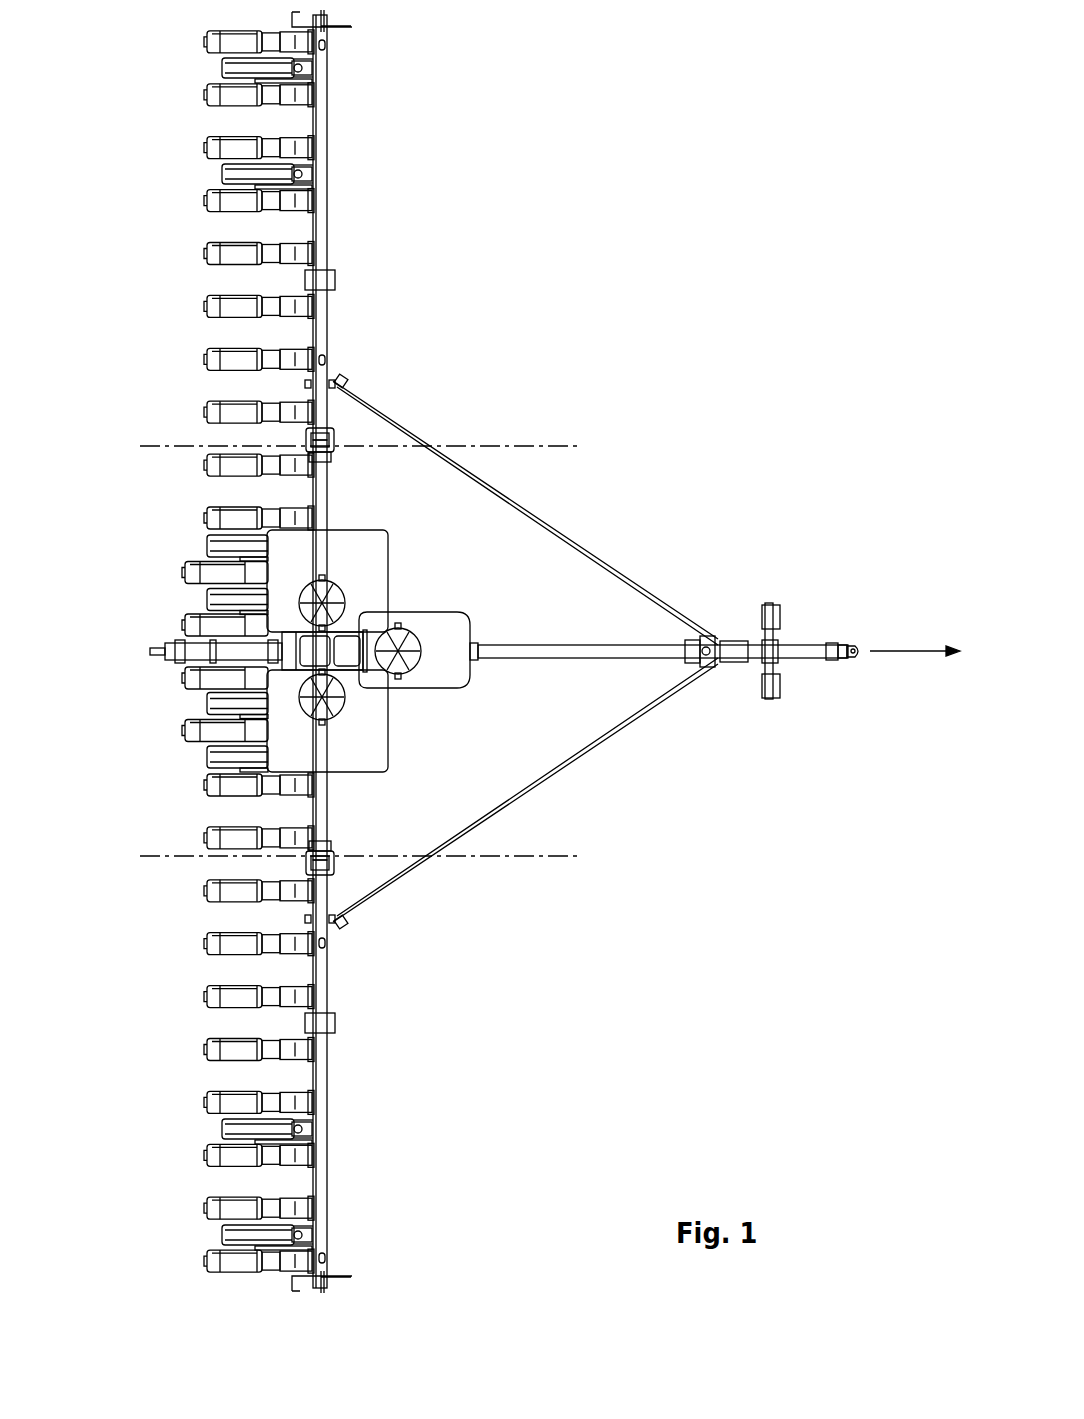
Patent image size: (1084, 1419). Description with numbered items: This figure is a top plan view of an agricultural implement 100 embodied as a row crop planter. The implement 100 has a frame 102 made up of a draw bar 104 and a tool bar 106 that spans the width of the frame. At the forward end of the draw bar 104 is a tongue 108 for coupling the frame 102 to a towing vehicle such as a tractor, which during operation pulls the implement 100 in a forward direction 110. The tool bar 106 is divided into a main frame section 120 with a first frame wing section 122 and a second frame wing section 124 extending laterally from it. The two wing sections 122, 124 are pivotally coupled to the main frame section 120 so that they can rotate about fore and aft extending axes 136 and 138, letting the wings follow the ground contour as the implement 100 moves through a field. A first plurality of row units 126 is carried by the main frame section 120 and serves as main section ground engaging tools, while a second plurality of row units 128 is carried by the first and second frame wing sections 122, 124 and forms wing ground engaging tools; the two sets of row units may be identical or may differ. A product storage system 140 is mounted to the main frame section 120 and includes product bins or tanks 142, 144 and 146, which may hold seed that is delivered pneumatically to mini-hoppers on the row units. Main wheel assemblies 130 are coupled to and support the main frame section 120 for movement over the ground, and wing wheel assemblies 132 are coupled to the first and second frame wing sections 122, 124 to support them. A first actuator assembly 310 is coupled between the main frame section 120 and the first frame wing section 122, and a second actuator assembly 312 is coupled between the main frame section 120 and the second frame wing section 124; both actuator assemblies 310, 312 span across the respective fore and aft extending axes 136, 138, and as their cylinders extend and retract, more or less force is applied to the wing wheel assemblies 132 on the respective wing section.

The implement 100 is at (510, 1065).
The frame 102 is at (634, 518).
The draw bar 104 is at (605, 652).
The tool bar 106 is at (325, 990).
The tongue 108 is at (790, 640).
The forward direction 110 is at (915, 660).
The main frame section 120 is at (325, 785).
The first frame wing section 122 is at (325, 118).
The second frame wing section 124 is at (325, 1168).
The first plurality of row units 126 is at (207, 519).
The second plurality of row units 128 is at (207, 359).
The main wheel assemblies 130 is at (207, 600).
The wing wheel assemblies 132 is at (207, 174).
The fore and aft extending axis 136 is at (547, 440).
The fore and aft extending axis 138 is at (547, 860).
The product storage system 140 is at (424, 598).
The product bin 142 is at (375, 565).
The product bin 144 is at (455, 625).
The product bin 146 is at (375, 735).
The first actuator assembly 310 is at (325, 462).
The second actuator assembly 312 is at (330, 870).